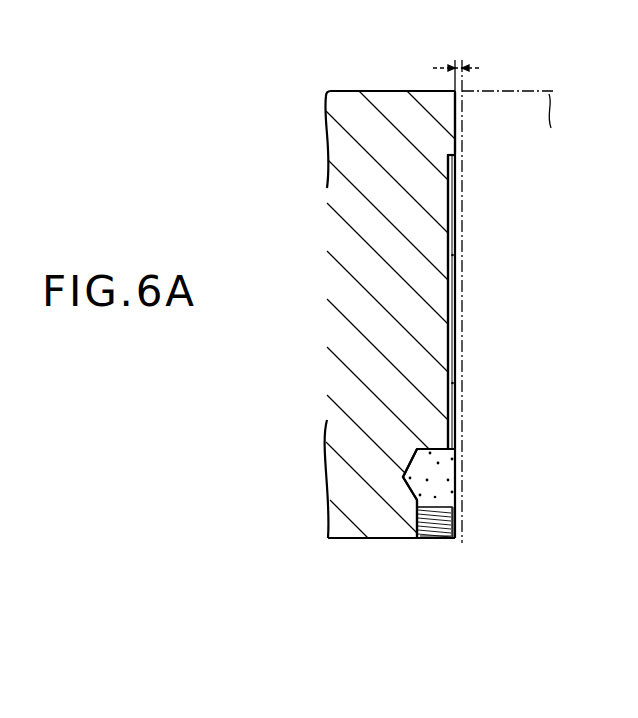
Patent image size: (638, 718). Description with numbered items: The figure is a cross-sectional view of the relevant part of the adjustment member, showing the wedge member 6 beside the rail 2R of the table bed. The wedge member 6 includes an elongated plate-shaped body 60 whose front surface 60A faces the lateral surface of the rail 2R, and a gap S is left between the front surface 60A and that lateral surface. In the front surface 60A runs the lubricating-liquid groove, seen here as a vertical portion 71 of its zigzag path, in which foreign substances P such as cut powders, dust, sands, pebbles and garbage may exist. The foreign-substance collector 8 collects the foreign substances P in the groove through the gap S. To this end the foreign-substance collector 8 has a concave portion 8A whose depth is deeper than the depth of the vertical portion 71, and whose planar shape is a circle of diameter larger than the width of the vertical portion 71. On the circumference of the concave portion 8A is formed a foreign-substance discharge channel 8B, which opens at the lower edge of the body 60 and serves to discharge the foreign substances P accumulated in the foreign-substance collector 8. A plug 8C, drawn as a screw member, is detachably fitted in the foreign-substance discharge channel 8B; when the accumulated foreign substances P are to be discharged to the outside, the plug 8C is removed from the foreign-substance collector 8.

The wedge member 6 is at (379, 90).
The body 60 is at (372, 520).
The front surface 60A is at (457, 124).
The rail 2R is at (464, 202).
The gap S is at (458, 62).
The vertical portion 71 is at (450, 318).
The foreign substances P is at (453, 255).
The foreign-substance collector 8 is at (468, 522).
The concave portion 8A is at (439, 453).
The foreign-substance discharge channel 8B is at (436, 540).
The plug 8C is at (430, 527).